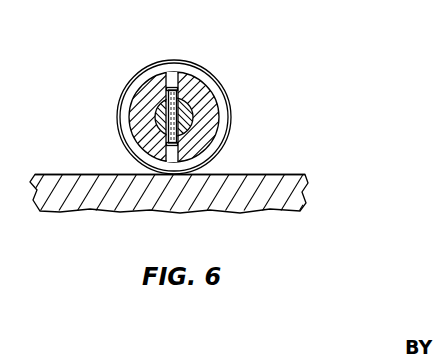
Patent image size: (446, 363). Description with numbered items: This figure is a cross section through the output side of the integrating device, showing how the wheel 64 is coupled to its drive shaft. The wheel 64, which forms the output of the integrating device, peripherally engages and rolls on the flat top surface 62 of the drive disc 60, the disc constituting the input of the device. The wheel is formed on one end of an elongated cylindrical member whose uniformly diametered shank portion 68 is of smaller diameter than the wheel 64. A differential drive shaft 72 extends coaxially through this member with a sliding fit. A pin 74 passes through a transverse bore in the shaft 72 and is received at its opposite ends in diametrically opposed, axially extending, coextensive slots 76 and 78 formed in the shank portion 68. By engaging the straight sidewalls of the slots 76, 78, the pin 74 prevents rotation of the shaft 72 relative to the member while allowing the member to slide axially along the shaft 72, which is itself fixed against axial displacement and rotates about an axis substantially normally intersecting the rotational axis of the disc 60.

The drive disc 60 is at (80, 220).
The flat top surface 62 is at (275, 175).
The wheel 64 is at (211, 69).
The shank portion 68 is at (153, 77).
The differential drive shaft 72 is at (152, 114).
The pin 74 is at (180, 93).
The slot 76 is at (171, 75).
The slot 78 is at (187, 139).